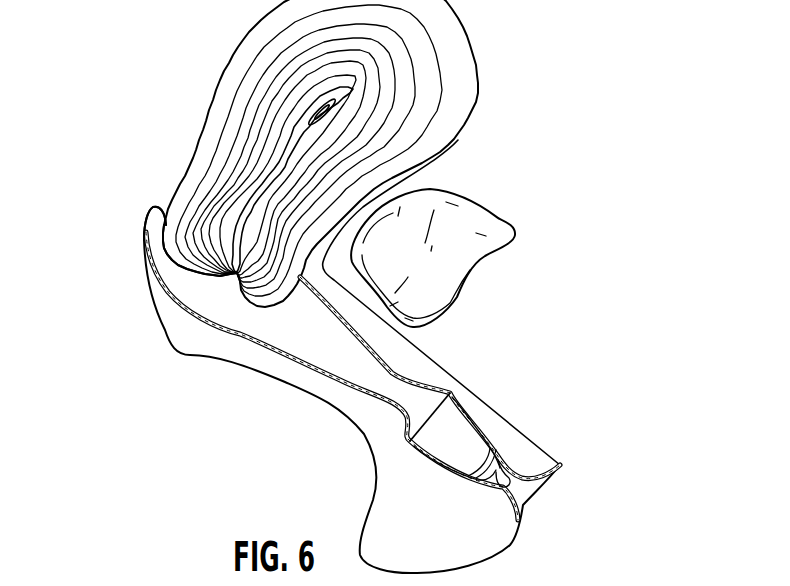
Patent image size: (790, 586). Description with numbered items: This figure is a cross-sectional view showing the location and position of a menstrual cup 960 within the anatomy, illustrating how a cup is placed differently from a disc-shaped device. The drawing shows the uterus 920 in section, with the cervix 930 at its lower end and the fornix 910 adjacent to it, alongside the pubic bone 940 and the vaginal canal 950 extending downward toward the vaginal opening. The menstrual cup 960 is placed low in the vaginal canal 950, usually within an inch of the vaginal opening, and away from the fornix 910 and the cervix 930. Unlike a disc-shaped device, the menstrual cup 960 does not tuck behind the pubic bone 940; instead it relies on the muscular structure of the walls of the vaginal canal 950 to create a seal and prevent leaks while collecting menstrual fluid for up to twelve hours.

The fornix 910 is at (152, 246).
The uterus 920 is at (452, 63).
The cervix 930 is at (216, 275).
The pubic bone 940 is at (490, 233).
The vaginal canal 950 is at (398, 390).
The menstrual cup 960 is at (477, 437).